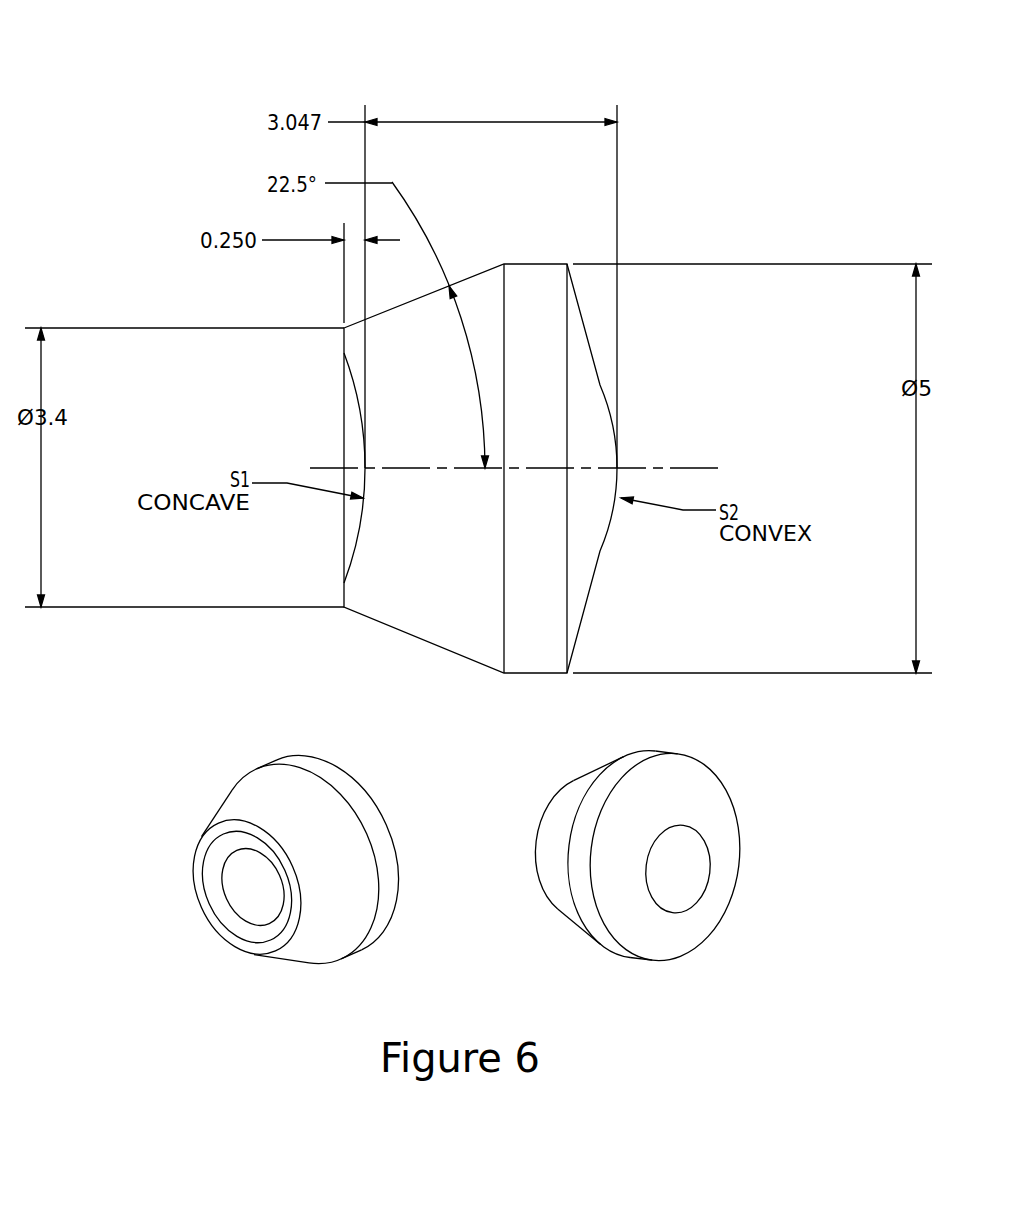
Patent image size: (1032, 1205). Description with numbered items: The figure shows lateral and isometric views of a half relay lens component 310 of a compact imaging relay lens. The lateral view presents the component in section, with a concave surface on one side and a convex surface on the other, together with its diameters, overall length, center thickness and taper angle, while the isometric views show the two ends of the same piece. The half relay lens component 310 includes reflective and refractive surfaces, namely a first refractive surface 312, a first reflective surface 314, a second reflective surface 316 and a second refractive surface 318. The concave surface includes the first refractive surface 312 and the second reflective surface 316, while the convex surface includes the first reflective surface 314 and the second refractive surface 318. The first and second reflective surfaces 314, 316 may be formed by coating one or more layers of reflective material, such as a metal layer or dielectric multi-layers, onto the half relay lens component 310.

The half relay lens component 310 is at (120, 74).
The first refractive surface 312 is at (209, 894).
The first reflective surface 314 is at (688, 867).
The second reflective surface 316 is at (182, 887).
The second refractive surface 318 is at (746, 868).